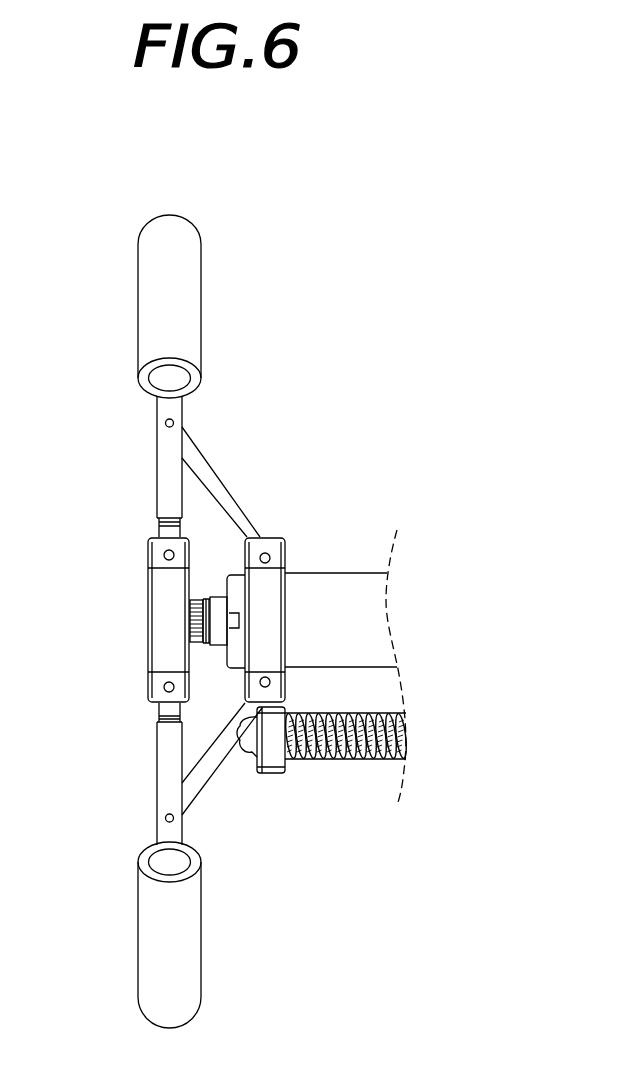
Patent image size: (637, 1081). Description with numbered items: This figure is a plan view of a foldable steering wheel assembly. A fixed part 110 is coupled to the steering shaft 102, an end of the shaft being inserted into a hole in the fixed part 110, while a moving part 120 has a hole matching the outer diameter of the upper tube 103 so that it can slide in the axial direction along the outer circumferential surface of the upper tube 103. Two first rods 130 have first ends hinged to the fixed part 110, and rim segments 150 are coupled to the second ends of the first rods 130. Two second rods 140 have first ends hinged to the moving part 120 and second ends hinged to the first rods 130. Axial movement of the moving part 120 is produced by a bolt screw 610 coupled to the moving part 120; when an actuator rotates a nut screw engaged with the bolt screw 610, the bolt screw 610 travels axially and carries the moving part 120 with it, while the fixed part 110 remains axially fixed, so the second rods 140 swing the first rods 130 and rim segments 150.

The steering shaft 102 is at (222, 600).
The upper tube 103 is at (372, 617).
The fixed part 110 is at (168, 636).
The moving part 120 is at (262, 637).
The first rod 130 is at (165, 467).
The second rod 140 is at (218, 483).
The rim segment 150 is at (147, 306).
The bolt screw 610 is at (404, 734).